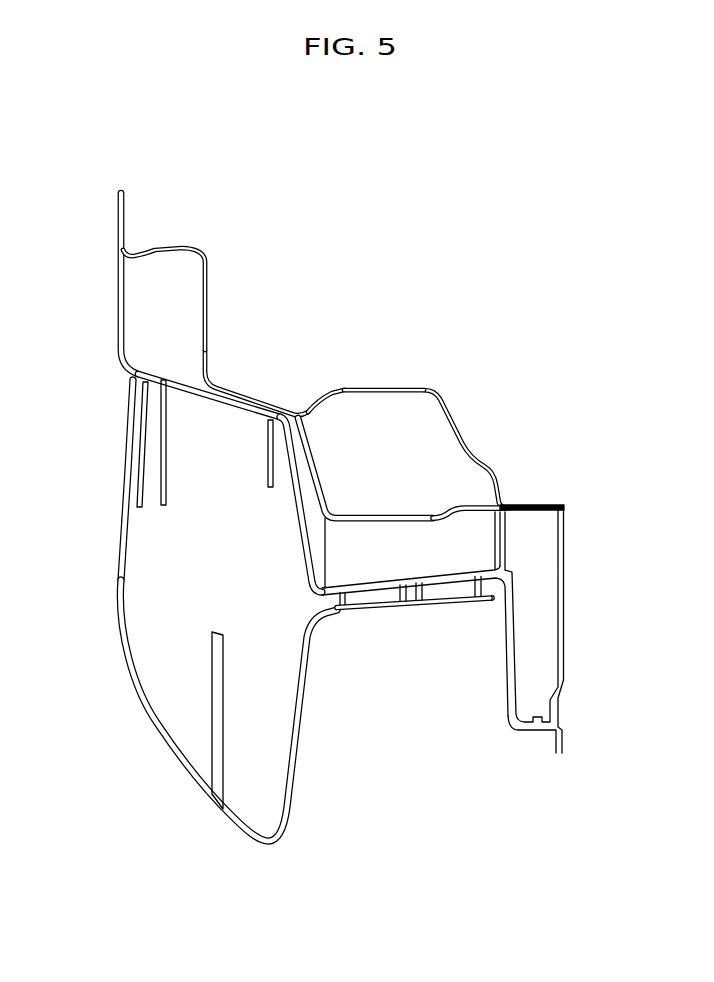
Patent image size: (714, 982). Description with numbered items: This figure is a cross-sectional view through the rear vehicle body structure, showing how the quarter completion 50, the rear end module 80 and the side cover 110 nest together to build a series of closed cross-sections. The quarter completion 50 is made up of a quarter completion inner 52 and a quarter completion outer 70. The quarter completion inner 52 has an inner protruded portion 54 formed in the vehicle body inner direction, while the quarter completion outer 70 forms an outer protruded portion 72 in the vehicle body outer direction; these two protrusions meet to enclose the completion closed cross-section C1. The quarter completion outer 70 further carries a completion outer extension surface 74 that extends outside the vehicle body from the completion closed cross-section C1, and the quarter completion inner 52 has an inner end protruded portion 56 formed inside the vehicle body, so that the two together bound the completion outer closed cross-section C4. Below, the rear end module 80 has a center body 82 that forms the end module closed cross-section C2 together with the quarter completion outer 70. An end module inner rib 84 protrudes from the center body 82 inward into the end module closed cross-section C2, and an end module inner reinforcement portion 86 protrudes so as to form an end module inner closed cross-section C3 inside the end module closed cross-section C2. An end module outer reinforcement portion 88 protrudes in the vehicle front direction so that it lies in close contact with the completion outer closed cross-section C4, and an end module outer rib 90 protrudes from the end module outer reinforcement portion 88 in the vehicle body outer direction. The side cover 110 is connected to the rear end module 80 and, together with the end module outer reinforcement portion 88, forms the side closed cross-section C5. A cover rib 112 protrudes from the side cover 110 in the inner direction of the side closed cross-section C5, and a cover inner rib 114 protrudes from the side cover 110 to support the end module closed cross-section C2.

The quarter completion 50 is at (336, 382).
The quarter completion inner 52 is at (409, 409).
The inner protruded portion 54 is at (405, 389).
The inner end protruded portion 56 is at (208, 298).
The quarter completion outer 70 is at (181, 392).
The outer protruded portion 72 is at (477, 507).
The completion outer extension surface 74 is at (174, 377).
The rear end module 80 is at (484, 629).
The center body 82 is at (460, 583).
The end module inner rib 84 is at (322, 541).
The end module inner reinforcement portion 86 is at (566, 683).
The end module outer reinforcement portion 88 is at (245, 410).
The end module outer rib 90 is at (165, 464).
The side cover 110 is at (217, 752).
The cover rib 112 is at (214, 732).
The cover inner rib 114 is at (352, 609).
The completion closed cross-section C1 is at (377, 421).
The end module closed cross-section C2 is at (400, 560).
The end module inner closed cross-section C3 is at (538, 627).
The completion outer closed cross-section C4 is at (157, 291).
The side closed cross-section C5 is at (170, 560).